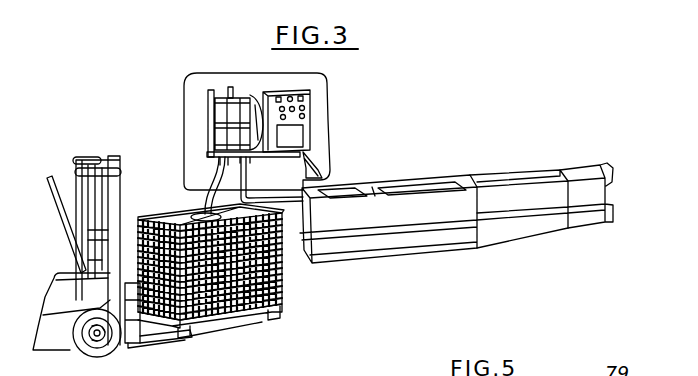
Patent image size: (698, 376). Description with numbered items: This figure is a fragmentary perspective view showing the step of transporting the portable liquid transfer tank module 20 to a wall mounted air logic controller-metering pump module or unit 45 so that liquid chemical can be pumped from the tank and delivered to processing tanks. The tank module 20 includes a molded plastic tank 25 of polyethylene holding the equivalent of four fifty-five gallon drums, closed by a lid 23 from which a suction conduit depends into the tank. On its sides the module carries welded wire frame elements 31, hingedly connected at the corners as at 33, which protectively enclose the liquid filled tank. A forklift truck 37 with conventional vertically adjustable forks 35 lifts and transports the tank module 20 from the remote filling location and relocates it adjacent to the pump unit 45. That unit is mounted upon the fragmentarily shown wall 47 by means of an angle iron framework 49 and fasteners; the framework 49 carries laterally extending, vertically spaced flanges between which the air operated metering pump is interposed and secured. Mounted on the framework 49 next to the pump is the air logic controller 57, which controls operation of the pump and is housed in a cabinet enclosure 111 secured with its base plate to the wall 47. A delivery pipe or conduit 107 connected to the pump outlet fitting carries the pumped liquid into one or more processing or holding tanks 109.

The tank module 20 is at (231, 266).
The lid 23 is at (194, 216).
The molded tank 25 is at (177, 223).
The welded wire frame elements 31 is at (252, 313).
The hinged corner connections 33 is at (276, 270).
The forks 35 is at (153, 320).
The forklift truck 37 is at (52, 335).
The air logic controller-metering pump module 45 is at (228, 68).
The wall 47 is at (314, 111).
The angle iron framework 49 is at (210, 125).
The air logic controller 57 is at (306, 88).
The delivery pipe 107 is at (266, 199).
The processing or holding tanks 109 is at (493, 172).
The cabinet enclosure 111 is at (303, 139).